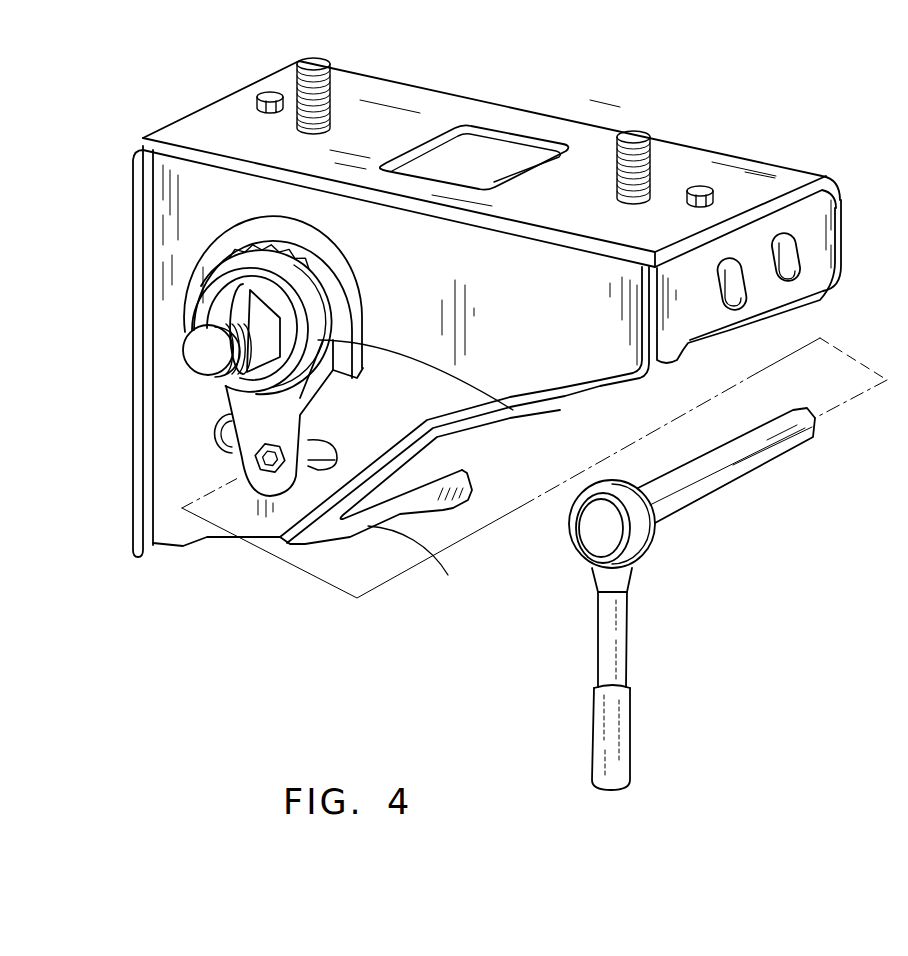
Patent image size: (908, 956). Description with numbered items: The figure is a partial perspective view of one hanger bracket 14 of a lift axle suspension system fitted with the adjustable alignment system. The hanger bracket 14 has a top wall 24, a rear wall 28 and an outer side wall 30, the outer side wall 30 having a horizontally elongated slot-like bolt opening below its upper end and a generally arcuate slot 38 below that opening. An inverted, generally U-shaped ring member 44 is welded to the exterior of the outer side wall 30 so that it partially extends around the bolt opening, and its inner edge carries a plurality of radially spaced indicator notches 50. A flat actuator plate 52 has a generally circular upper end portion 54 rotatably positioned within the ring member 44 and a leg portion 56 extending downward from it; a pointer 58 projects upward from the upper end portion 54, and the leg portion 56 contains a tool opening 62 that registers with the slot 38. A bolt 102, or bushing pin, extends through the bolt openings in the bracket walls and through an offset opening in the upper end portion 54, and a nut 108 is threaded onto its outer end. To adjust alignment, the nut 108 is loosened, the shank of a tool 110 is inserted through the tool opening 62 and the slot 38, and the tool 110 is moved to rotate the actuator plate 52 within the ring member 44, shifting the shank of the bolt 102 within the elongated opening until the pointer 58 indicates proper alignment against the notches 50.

The hanger bracket 14 is at (747, 132).
The top wall 24 is at (371, 140).
The outer side wall 30 is at (556, 318).
The upper end portion 54 is at (490, 400).
The rear wall 28 is at (436, 548).
The actuator plate 52 is at (228, 398).
The leg portion 56 is at (260, 432).
The arcuate slot 38 is at (320, 453).
The tool opening 62 is at (273, 460).
The pointer 58 is at (245, 252).
The indicator notches 50 is at (248, 257).
The ring member 44 is at (180, 281).
The nut 108 is at (236, 287).
The bolt 102 is at (190, 352).
The tool 110 is at (634, 641).